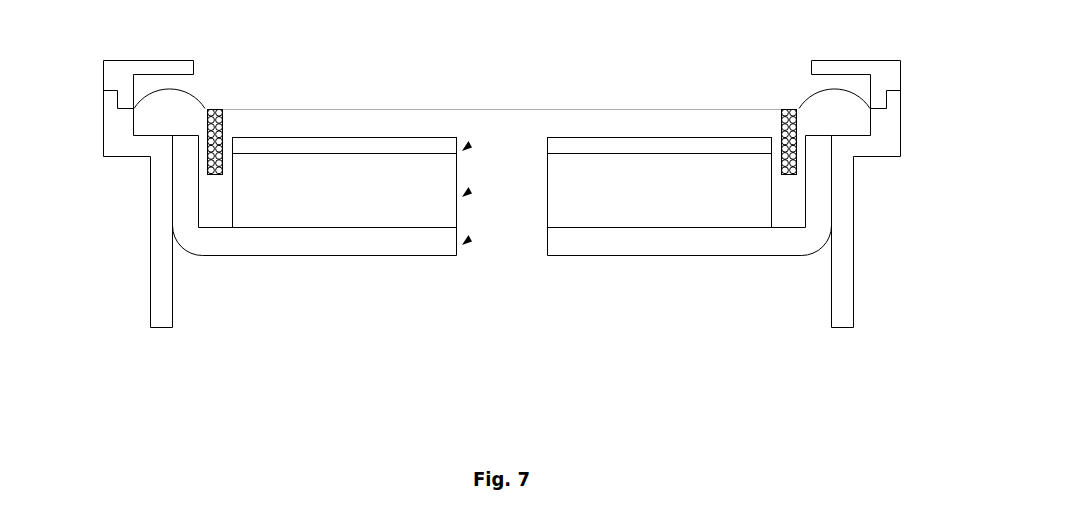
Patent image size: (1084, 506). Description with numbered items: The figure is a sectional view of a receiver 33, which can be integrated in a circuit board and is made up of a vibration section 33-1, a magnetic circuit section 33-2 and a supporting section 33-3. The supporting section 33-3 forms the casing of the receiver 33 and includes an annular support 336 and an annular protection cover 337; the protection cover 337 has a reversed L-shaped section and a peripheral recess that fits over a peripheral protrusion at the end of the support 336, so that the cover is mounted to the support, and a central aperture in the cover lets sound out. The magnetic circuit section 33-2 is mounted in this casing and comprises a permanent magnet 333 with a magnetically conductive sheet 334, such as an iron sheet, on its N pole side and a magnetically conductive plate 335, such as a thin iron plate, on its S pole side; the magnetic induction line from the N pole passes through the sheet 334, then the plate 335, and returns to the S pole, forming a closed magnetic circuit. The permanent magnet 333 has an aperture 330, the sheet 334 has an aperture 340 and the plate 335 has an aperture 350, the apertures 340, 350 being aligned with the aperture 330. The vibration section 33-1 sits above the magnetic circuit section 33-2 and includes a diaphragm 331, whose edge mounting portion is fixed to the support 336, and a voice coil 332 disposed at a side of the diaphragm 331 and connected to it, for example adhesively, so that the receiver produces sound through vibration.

The receiver 33 is at (528, 75).
The vibration section 33-1 is at (268, 357).
The magnetic circuit section 33-2 is at (492, 357).
The supporting section 33-3 is at (698, 357).
The diaphragm 331 is at (407, 108).
The voice coil 332 is at (222, 108).
The permanent magnet 333 is at (332, 205).
The magnetically conductive sheet 334 is at (305, 145).
The magnetically conductive plate 335 is at (265, 240).
The support 336 is at (157, 267).
The protection cover 337 is at (118, 76).
The aperture 340 is at (468, 146).
The aperture 330 is at (468, 192).
The aperture 350 is at (468, 240).